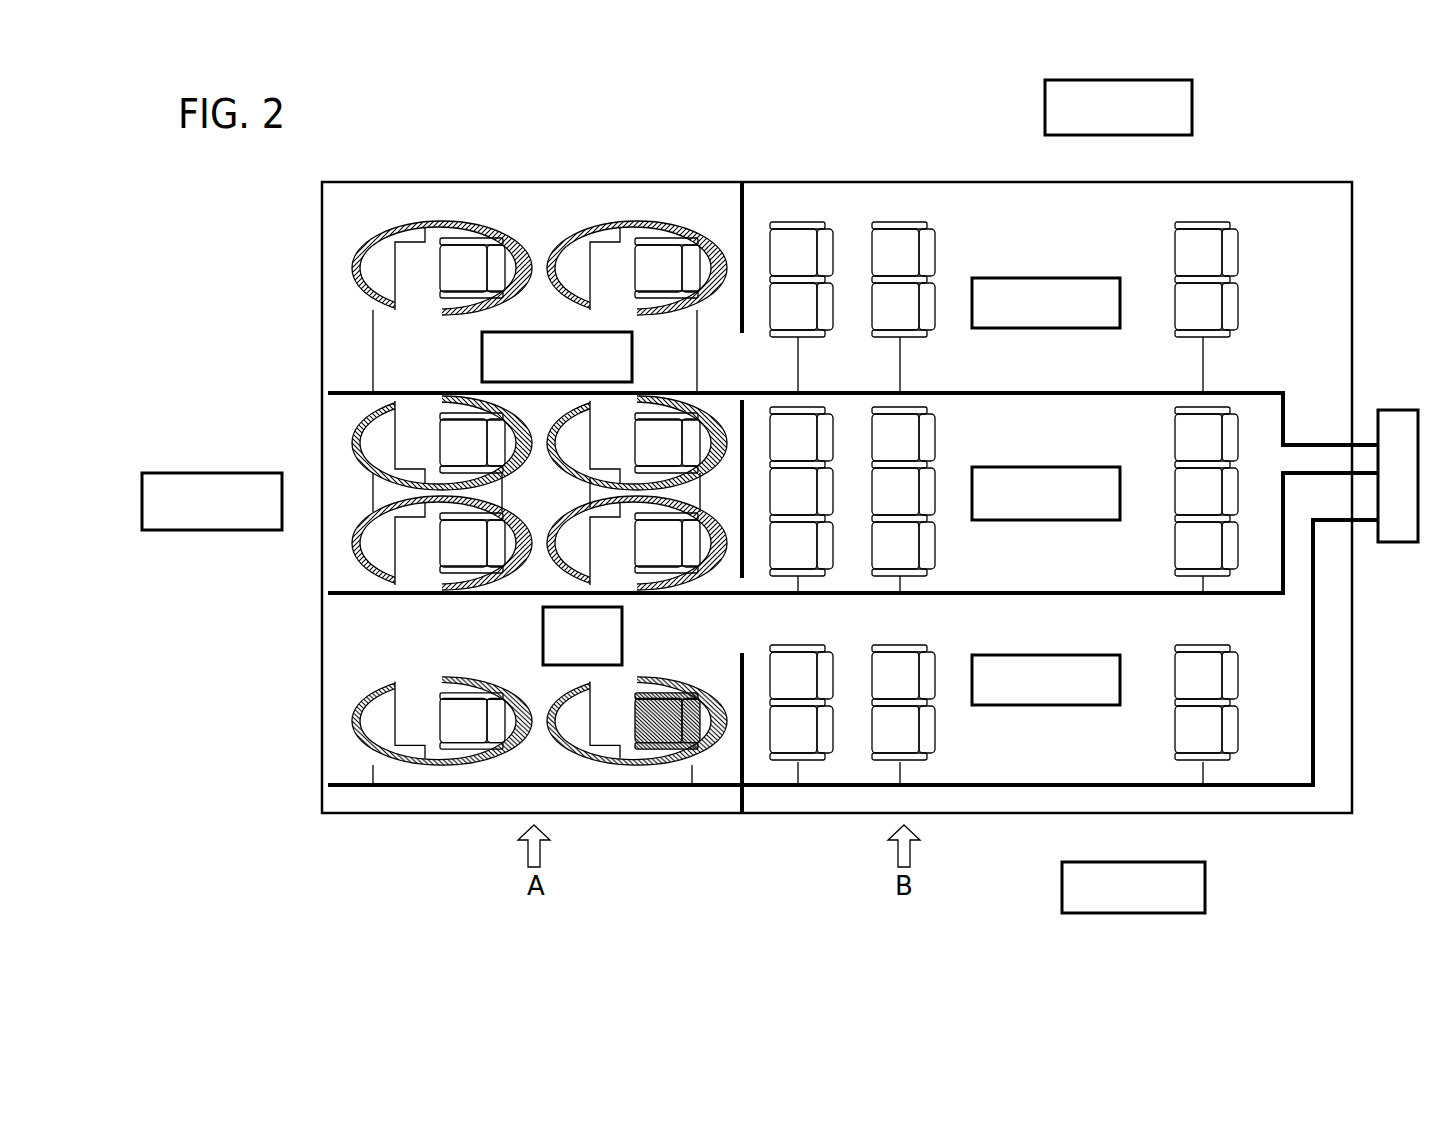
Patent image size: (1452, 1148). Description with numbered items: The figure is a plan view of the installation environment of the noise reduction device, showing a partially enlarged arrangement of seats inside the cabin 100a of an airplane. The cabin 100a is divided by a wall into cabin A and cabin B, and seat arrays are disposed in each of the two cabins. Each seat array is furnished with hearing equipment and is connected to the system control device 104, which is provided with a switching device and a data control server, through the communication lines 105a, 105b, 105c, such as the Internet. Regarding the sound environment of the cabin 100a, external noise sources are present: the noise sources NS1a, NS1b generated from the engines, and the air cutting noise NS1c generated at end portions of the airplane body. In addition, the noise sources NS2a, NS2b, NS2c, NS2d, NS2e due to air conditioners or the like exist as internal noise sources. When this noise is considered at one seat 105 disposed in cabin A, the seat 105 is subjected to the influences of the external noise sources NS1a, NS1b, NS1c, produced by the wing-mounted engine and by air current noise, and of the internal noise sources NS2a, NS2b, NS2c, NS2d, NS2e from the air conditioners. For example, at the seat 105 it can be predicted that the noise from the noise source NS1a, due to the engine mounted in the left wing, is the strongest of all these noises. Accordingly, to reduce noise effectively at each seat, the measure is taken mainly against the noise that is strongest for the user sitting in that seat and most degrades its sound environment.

The cabin 100a is at (547, 177).
The system control device 104 is at (1397, 408).
The seat 105 is at (658, 722).
The communication line 105a is at (1263, 787).
The communication line 105b is at (1323, 440).
The communication line 105c is at (1283, 540).
The noise source NS1a is at (737, 746).
The noise source NS1b is at (681, 663).
The air cutting noise NS1c is at (567, 686).
The noise source NS2a is at (735, 708).
The noise source NS2b is at (700, 673).
The noise source NS2c is at (722, 685).
The noise source NS2d is at (616, 684).
The noise source NS2e is at (647, 662).